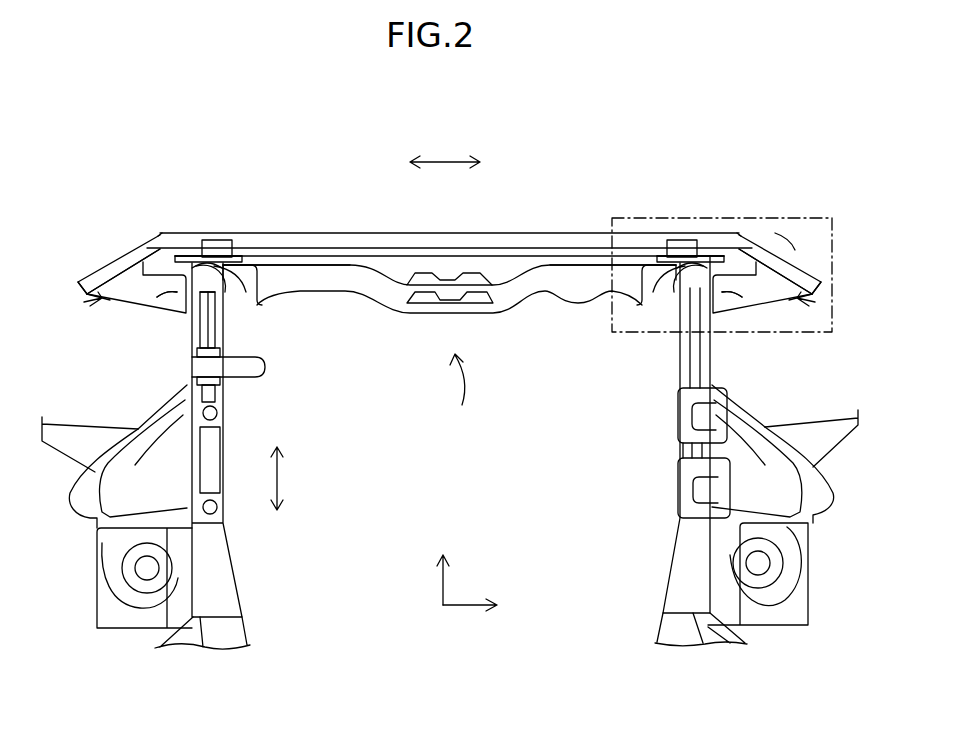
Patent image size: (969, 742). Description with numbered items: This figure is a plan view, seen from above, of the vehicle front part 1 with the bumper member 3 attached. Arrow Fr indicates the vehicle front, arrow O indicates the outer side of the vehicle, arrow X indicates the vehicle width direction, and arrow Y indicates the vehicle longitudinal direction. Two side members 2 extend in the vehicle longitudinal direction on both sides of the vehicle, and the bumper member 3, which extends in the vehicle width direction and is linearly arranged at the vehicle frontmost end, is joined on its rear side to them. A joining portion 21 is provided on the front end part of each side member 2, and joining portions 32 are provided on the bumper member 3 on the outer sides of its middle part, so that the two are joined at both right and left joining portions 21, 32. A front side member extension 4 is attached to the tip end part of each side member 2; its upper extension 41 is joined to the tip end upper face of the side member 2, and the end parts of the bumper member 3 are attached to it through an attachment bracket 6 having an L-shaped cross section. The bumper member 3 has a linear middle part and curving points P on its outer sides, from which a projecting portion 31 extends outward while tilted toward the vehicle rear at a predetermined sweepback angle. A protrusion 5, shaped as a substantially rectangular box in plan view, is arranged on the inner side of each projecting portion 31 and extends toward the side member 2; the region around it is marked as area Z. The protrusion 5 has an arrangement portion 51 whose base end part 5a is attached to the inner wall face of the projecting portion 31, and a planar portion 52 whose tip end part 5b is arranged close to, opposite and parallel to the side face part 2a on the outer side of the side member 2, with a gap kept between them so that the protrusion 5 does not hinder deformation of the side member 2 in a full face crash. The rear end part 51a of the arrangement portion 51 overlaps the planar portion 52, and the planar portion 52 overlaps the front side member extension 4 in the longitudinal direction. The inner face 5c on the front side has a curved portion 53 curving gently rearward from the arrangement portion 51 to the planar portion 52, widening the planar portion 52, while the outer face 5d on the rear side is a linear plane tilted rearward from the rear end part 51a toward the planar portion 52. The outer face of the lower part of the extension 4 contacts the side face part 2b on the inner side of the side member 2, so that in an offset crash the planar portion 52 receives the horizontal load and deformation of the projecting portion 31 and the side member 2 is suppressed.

The vehicle front part 1 is at (458, 399).
The side member 2 is at (189, 343).
The side face part on the vehicle outer side 2a is at (183, 353).
The side face part on the vehicle inner side 2b is at (266, 357).
The bumper member 3 is at (381, 227).
The front side member extension 4 is at (255, 266).
The upper extension 41 is at (262, 268).
The protrusion 5 is at (105, 301).
The base end part 5a is at (90, 288).
The tip end part 5b is at (173, 297).
The inner face on the vehicle front side 5c is at (228, 293).
The outer face on the vehicle rear side 5d is at (93, 310).
The attachment bracket 6 is at (215, 245).
The joining portion 21 is at (195, 262).
The projecting portion 31 is at (125, 263).
The joining portion 32 is at (202, 255).
The arrangement portion 51 is at (132, 245).
The rear end part 51a is at (85, 303).
The planar portion 52 is at (226, 337).
The curved portion 53 is at (178, 257).
The curving point P is at (158, 236).
The region Z is at (780, 213).
The vehicle width direction X is at (445, 148).
The vehicle longitudinal direction Y is at (288, 478).
The vehicle front Fr is at (444, 565).
The outer side of the vehicle O is at (482, 606).